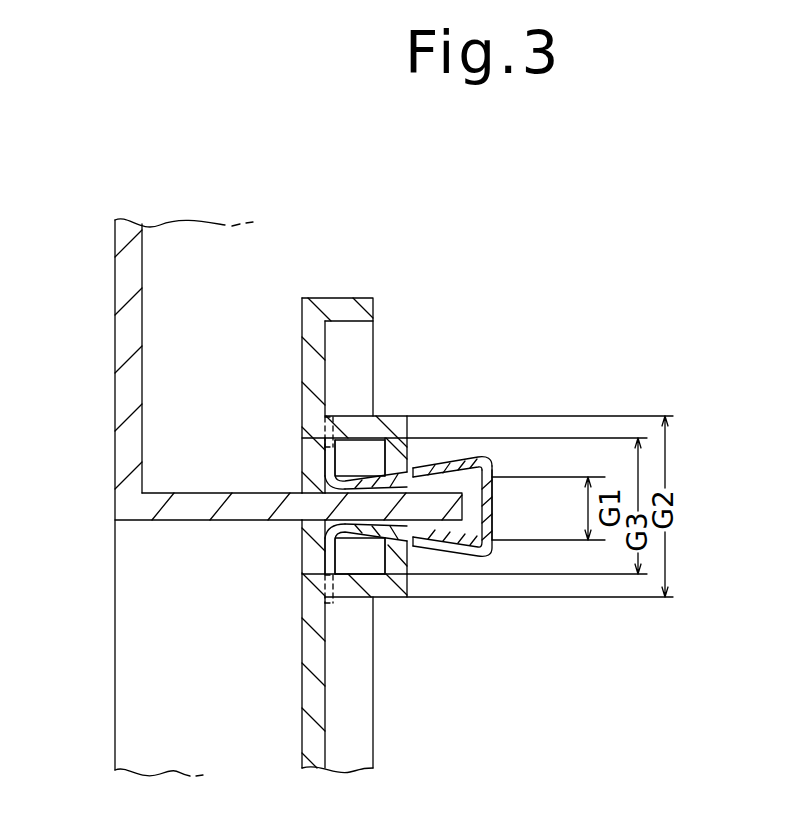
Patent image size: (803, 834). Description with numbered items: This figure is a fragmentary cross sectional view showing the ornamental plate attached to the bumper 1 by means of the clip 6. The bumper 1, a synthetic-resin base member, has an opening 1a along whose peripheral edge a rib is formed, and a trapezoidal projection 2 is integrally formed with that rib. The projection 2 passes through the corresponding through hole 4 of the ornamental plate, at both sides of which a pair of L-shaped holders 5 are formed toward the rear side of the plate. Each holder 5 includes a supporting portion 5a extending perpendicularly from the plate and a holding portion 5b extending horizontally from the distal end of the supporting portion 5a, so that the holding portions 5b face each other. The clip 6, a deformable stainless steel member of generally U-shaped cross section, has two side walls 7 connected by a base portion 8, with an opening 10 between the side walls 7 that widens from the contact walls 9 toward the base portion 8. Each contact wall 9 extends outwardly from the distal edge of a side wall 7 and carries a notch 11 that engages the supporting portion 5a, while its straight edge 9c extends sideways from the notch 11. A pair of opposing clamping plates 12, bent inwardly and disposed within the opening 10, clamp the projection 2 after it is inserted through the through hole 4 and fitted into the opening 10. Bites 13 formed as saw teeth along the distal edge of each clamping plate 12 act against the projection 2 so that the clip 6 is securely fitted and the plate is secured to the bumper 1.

The bumper 1 is at (115, 440).
The opening 1a is at (200, 520).
The projection 2 is at (466, 507).
The through hole 4 is at (325, 438).
The holder 5 is at (391, 535).
The supporting portion 5a is at (385, 416).
The holding portion 5b is at (408, 428).
The clip 6 is at (490, 470).
The side wall 7 is at (491, 472).
The base portion 8 is at (493, 515).
The contact wall 9 is at (314, 499).
The straight edge 9c is at (330, 408).
The opening 10 is at (332, 487).
The notch 11 is at (327, 421).
The clamping plate 12 is at (325, 505).
The bite 13 is at (402, 478).